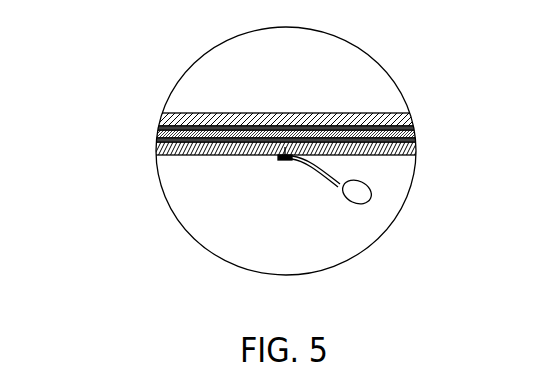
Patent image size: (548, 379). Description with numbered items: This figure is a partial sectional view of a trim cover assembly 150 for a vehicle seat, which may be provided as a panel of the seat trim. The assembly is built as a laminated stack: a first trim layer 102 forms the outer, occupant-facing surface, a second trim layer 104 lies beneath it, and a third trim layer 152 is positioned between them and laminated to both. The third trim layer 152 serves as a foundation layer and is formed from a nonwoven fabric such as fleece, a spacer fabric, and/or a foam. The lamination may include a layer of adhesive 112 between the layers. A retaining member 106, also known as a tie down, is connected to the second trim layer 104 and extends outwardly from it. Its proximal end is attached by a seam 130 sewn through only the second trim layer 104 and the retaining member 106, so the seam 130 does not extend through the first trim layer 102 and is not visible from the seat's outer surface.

The trim cover assembly 150 is at (362, 86).
The first trim layer 102 is at (163, 113).
The layer of adhesive 112 is at (157, 122).
The third trim layer 152 is at (157, 134).
The second trim layer 104 is at (162, 167).
The seam 130 is at (284, 161).
The retaining member 106 is at (316, 194).